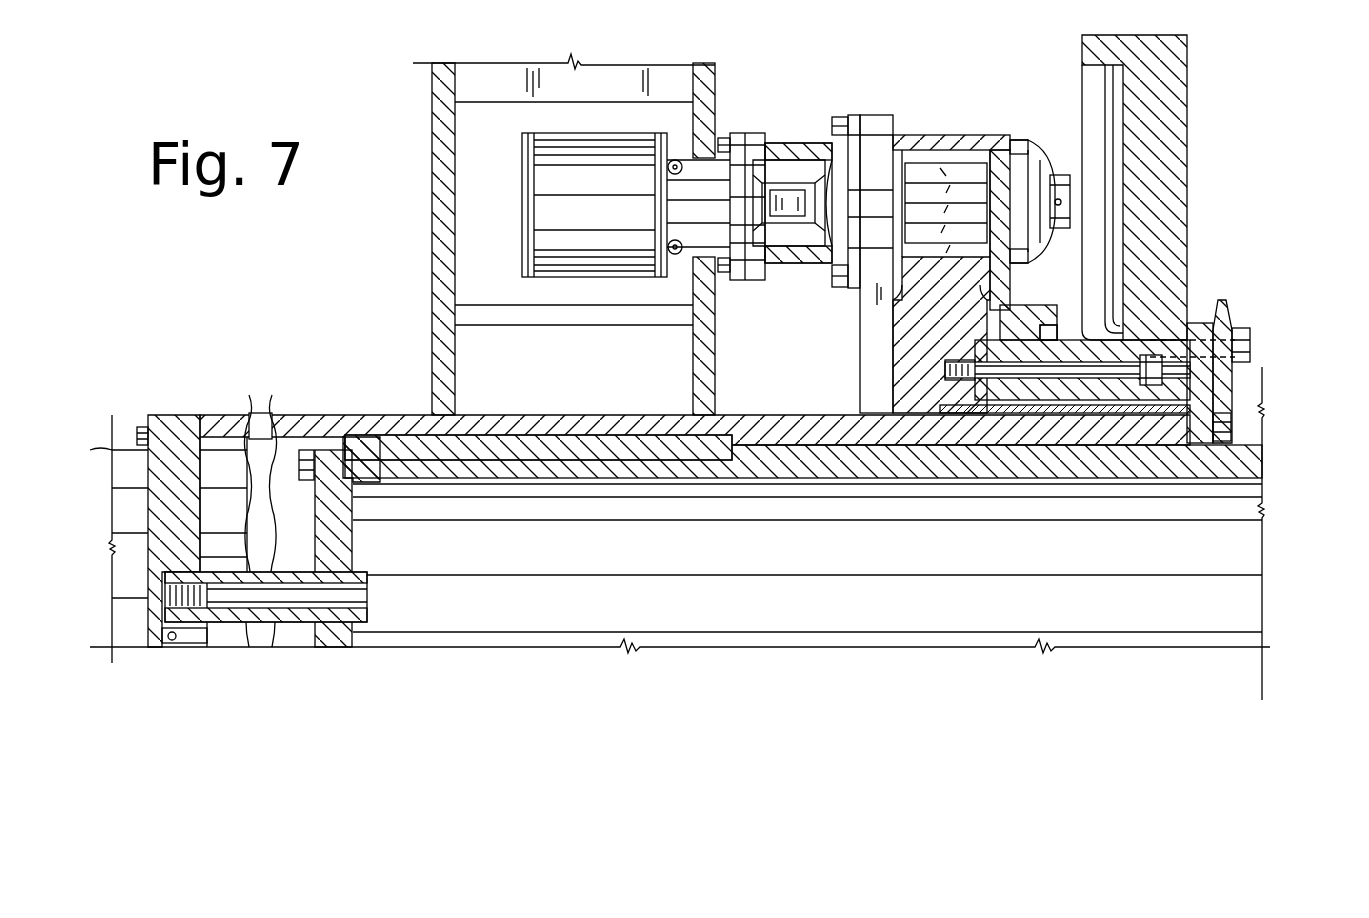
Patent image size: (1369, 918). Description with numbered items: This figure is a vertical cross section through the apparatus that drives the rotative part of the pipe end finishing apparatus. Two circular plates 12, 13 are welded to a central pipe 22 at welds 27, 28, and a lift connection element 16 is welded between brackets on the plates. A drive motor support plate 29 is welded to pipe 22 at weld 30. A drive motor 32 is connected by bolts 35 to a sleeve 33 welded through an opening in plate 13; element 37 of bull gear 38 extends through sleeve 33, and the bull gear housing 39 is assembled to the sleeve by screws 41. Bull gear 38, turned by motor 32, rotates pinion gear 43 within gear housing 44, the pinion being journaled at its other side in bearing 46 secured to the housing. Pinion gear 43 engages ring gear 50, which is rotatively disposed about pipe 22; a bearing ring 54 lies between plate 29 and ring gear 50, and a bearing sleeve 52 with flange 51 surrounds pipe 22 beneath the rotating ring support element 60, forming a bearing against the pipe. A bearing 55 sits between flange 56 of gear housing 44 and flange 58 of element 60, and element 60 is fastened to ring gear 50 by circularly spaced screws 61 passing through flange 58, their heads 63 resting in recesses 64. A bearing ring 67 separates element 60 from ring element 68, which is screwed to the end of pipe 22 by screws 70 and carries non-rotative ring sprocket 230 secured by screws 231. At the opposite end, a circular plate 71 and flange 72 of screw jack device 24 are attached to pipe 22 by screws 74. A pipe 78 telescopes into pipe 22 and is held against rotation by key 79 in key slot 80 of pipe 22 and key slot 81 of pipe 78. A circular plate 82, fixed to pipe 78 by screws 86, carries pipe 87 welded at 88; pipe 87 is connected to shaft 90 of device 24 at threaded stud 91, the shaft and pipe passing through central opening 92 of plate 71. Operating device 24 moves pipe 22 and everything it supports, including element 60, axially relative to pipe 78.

The circular plate 12 is at (432, 208).
The circular plate 13 is at (715, 352).
The lift connection element 16 is at (455, 104).
The pipe 22 is at (268, 408).
The screw jack device 24 is at (120, 446).
The weld 27 is at (410, 410).
The weld 28 is at (456, 413).
The drive motor support plate 29 is at (862, 346).
The weld 30 is at (861, 412).
The drive motor 32 is at (522, 188).
The sleeve 33 is at (715, 112).
The bolts 35 is at (676, 158).
The element of bull gear 37 is at (788, 190).
The bull gear 38 is at (812, 163).
The bull gear housing 39 is at (775, 160).
The screws 41 is at (762, 124).
The pinion gear 43 is at (955, 163).
The gear housing 44 is at (990, 140).
The bearing 46 is at (1040, 142).
The ring gear 50 is at (872, 318).
The flange 51 is at (963, 413).
The bearing sleeve 52 is at (1075, 447).
The bearing ring 54 is at (905, 415).
The bearing 55 is at (1028, 318).
The flange 56 is at (1056, 330).
The flange 58 is at (1082, 336).
The rotating ring support element 60 is at (1187, 98).
The screws 61 is at (1162, 345).
The screw heads 63 is at (1150, 382).
The recesses 64 is at (1165, 387).
The bearing ring 67 is at (1222, 310).
The ring element 68 is at (1213, 390).
The screws 70 is at (1232, 428).
The circular plate 71 is at (172, 418).
The flange 72 is at (152, 425).
The screws 74 is at (145, 425).
The pipe 78 is at (655, 480).
The key 79 is at (410, 413).
The longitudinal key slot 80 is at (345, 437).
The longitudinal key slot 81 is at (540, 457).
The circular plate 82 is at (333, 648).
The screws 86 is at (312, 450).
The pipe 87 is at (280, 650).
The weld 88 is at (350, 560).
The shaft 90 is at (165, 623).
The threaded stud 91 is at (210, 650).
The central opening 92 is at (176, 645).
The ring sprocket 230 is at (1240, 325).
The screws 231 is at (1250, 348).